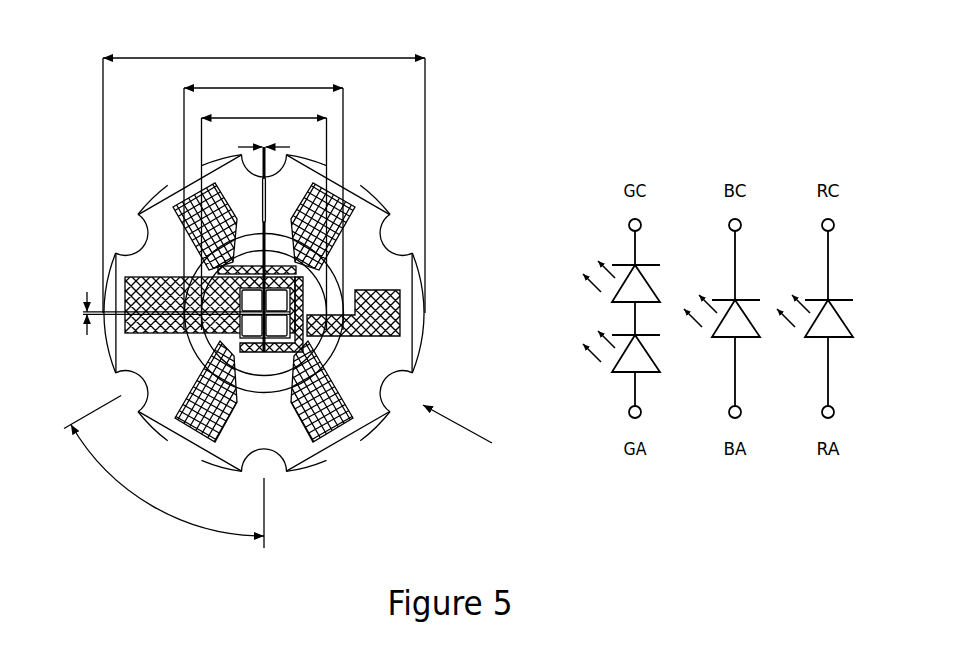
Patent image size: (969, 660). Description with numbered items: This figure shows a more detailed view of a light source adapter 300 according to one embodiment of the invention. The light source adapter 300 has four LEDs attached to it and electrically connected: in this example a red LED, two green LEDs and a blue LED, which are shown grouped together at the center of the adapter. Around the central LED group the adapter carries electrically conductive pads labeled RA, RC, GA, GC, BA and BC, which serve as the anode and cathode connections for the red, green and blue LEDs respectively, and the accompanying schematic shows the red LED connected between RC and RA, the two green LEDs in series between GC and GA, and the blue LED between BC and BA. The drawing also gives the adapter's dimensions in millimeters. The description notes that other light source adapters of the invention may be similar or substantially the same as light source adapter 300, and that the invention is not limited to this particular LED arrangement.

The light source adapter 300 is at (278, 290).
The red anode pad RA is at (210, 305).
The red cathode pad RC is at (213, 224).
The green anode pad GA is at (322, 228).
The green cathode pad GC is at (202, 391).
The blue anode pad BA is at (311, 392).
The blue cathode pad BC is at (361, 320).